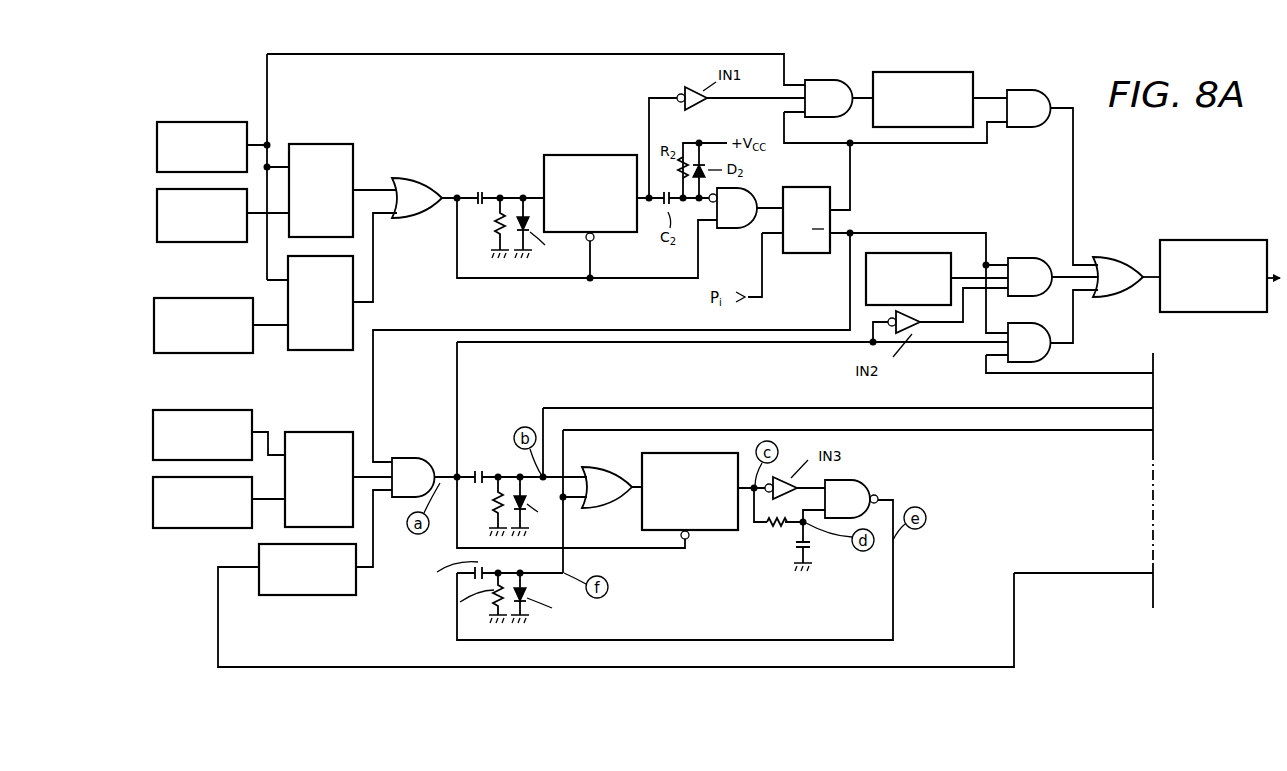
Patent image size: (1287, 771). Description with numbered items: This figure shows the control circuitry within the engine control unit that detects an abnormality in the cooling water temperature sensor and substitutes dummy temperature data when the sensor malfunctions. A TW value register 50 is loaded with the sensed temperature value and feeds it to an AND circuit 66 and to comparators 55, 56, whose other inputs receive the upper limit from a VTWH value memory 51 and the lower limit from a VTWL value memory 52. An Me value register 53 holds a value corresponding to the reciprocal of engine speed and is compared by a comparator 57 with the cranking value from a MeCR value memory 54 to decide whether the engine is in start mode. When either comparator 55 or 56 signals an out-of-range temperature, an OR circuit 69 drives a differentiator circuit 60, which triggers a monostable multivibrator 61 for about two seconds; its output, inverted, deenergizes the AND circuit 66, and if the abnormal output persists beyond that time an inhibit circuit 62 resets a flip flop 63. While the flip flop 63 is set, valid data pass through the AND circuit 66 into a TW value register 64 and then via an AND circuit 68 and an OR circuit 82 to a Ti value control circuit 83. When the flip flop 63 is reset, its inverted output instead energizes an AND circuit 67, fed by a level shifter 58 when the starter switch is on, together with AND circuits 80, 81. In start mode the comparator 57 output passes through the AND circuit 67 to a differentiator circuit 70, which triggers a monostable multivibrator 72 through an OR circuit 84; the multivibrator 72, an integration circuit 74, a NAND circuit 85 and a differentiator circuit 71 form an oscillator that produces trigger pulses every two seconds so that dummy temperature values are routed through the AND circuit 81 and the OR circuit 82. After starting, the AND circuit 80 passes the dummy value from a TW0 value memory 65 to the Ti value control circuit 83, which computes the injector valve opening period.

The engine cooling water temperature (TW) value register 50 is at (200, 122).
The VTWH value memory 51 is at (200, 242).
The VTWL value memory 52 is at (230, 298).
The engine rpm (Me) value register 53 is at (200, 410).
The MeCR value memory 54 is at (185, 528).
The comparator 55 is at (327, 144).
The comparator 56 is at (333, 350).
The comparator 57 is at (310, 432).
The level shifter 58 is at (318, 595).
The differentiator circuit 60 is at (502, 186).
The monostable multivibrator 61 is at (588, 155).
The inhibit circuit 62 is at (737, 228).
The flip flop 63 is at (808, 255).
The engine cooling water temperature (TW) value register 64 is at (930, 72).
The TW0 value memory 65 is at (918, 253).
The AND circuit 66 is at (828, 80).
The AND circuit 67 is at (412, 458).
The AND circuit 68 is at (1030, 90).
The OR circuit 69 is at (412, 178).
The differentiator circuit 70 is at (505, 461).
The differentiator circuit 71 is at (482, 608).
The monostable multivibrator 72 is at (693, 453).
The integration circuit 74 is at (789, 541).
The AND circuit 80 is at (1028, 258).
The AND circuit 81 is at (1032, 326).
The OR circuit 82 is at (1113, 257).
The valve opening period (Ti) value control circuit 83 is at (1222, 240).
The OR circuit 84 is at (607, 468).
The NAND circuit 85 is at (861, 480).